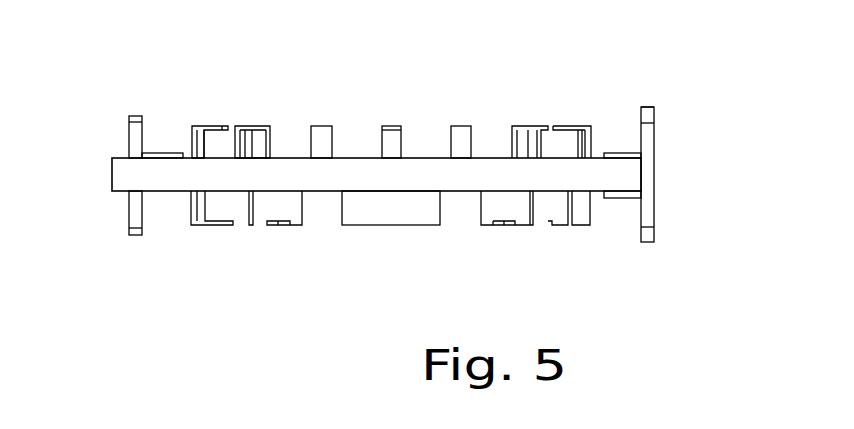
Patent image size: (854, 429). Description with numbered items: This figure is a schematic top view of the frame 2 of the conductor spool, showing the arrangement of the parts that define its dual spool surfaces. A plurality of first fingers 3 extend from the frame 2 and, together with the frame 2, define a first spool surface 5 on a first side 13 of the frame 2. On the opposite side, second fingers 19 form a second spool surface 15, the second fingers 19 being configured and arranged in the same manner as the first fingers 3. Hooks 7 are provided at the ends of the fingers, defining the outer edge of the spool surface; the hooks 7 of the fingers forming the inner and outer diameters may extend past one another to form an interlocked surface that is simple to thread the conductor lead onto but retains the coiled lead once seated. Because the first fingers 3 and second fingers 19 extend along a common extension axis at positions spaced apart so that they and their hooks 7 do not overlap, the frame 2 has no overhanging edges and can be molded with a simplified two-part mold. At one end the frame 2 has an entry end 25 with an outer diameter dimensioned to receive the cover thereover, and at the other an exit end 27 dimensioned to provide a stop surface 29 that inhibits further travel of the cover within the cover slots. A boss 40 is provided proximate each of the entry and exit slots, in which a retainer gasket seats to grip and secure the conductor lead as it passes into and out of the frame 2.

The frame 2 is at (608, 175).
The first fingers 3 is at (370, 212).
The first spool surface 5 is at (267, 215).
The hooks 7 is at (565, 127).
The first side 13 is at (463, 191).
The second spool surface 15 is at (262, 143).
The second fingers 19 is at (388, 145).
The entry end 25 is at (137, 215).
The exit end 27 is at (649, 133).
The stop surface 29 is at (642, 110).
The boss 40 is at (168, 153).